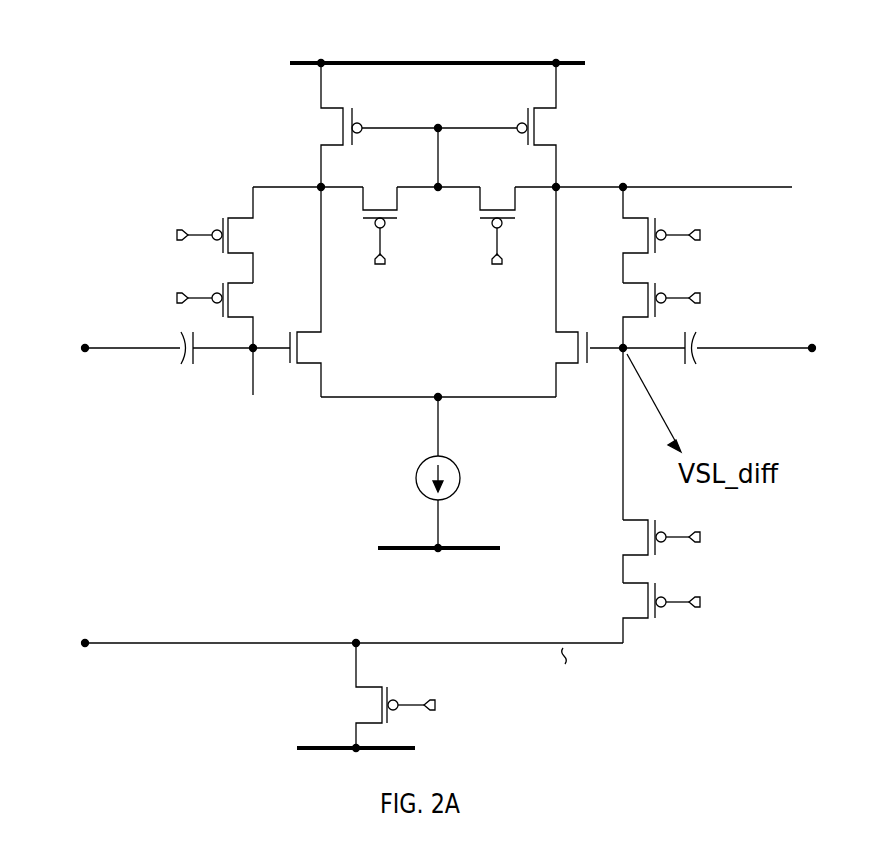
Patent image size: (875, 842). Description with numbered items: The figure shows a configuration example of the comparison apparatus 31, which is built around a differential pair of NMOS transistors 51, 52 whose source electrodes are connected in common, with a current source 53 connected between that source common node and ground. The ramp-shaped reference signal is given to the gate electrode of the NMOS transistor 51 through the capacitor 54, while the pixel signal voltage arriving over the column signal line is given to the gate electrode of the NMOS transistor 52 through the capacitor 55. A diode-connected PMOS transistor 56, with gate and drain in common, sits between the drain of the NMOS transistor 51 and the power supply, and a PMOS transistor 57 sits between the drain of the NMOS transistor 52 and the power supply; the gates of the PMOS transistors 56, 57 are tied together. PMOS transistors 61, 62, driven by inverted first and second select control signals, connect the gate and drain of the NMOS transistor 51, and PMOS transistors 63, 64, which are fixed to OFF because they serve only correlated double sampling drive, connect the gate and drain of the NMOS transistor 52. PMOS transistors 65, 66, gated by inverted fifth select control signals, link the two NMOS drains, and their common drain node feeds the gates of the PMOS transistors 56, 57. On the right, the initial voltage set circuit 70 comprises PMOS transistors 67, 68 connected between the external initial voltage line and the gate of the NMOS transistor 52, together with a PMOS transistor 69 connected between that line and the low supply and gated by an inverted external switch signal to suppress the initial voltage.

The comparison apparatus 31 is at (532, 49).
The NMOS transistor 51 is at (318, 350).
The NMOS transistor 52 is at (556, 350).
The current source 53 is at (461, 478).
The capacitor 54 is at (187, 368).
The capacitor 55 is at (689, 368).
The PMOS transistor 56 is at (323, 129).
The PMOS transistor 57 is at (553, 129).
The PMOS transistor 61 is at (248, 237).
The PMOS transistor 62 is at (248, 298).
The PMOS transistor 63 is at (625, 237).
The PMOS transistor 64 is at (625, 297).
The PMOS transistor 65 is at (380, 190).
The PMOS transistor 66 is at (497, 190).
The PMOS transistor 67 is at (625, 602).
The PMOS transistor 68 is at (625, 538).
The PMOS transistor 69 is at (358, 707).
The initial voltage set circuit 70 is at (210, 710).